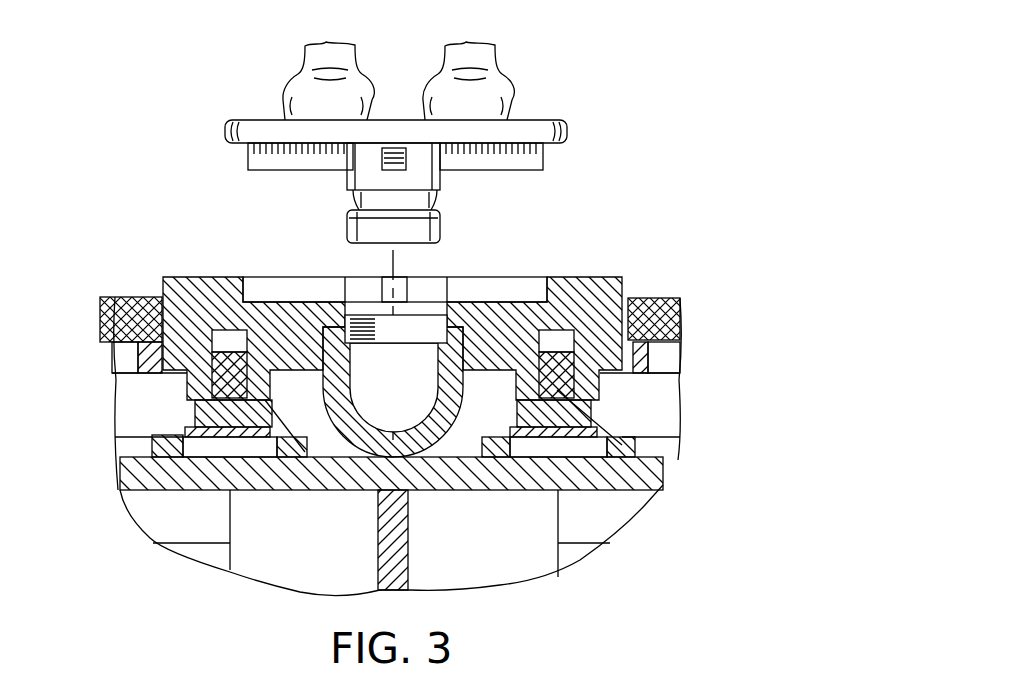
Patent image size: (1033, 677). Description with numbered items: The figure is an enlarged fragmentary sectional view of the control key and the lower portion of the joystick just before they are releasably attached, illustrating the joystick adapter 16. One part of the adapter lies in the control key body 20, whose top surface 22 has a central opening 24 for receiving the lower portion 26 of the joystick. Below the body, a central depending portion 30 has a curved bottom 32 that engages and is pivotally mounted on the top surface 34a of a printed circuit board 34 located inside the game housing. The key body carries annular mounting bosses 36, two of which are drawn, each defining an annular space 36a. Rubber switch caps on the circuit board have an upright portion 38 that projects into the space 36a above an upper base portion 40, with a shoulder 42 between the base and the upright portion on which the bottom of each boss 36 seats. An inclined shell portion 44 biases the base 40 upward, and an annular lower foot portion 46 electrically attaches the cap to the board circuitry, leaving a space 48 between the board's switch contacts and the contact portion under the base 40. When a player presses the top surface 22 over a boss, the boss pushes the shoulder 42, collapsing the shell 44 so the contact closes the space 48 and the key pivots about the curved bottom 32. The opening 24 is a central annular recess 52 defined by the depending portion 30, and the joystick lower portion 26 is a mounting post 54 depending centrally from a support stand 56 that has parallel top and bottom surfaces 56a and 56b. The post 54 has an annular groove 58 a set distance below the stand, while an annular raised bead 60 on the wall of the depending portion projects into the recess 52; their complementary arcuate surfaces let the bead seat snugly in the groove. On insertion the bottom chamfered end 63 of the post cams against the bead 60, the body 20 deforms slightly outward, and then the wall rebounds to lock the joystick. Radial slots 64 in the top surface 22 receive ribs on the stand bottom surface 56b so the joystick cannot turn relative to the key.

The joystick adapter 16 is at (382, 146).
The control key body 20 is at (430, 327).
The top surface 22 is at (193, 277).
The central opening 24 is at (443, 273).
The lower portion 26 is at (323, 213).
The central depending portion 30 is at (355, 396).
The curved bottom 32 is at (430, 452).
The printed circuit board 34 is at (440, 523).
The top surface 34a is at (668, 450).
The annular mounting bosses 36 is at (180, 383).
The annular space 36a is at (170, 280).
The upright portion 38 is at (205, 406).
The upper base portion 40 is at (226, 458).
The shoulder 42 is at (530, 395).
The inclined shell portion 44 is at (280, 432).
The annular lower foot portion 46 is at (153, 445).
The space 48 is at (243, 447).
The central annular recess 52 is at (348, 372).
The mounting post 54 is at (443, 190).
The support stand 56 is at (562, 125).
The top surface 56a is at (540, 120).
The bottom surface 56b is at (227, 146).
The annular groove 58 is at (353, 190).
The annular raised portion or bead 60 is at (350, 327).
The bottom chamfered end 63 is at (433, 236).
The radial slots 64 is at (530, 284).